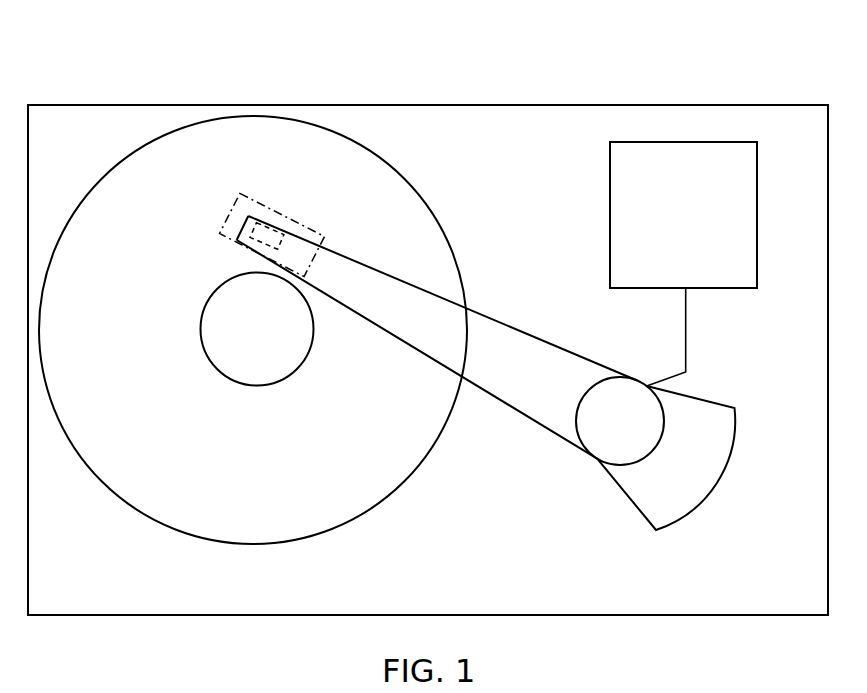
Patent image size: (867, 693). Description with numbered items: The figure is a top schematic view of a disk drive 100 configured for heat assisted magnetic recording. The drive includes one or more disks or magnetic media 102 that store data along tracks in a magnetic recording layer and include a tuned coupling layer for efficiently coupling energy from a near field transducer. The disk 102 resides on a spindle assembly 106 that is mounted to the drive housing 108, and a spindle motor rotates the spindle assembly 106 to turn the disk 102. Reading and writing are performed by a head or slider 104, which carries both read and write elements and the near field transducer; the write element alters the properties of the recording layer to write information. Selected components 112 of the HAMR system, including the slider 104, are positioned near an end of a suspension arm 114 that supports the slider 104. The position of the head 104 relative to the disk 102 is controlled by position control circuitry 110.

The disk drive 100 is at (163, 72).
The magnetic medium 102 is at (385, 160).
The head/slider 104 is at (275, 233).
The spindle assembly 106 is at (257, 329).
The drive housing 108 is at (542, 104).
The position control circuitry 110 is at (683, 215).
The selected components of the HAMR system 112 is at (265, 207).
The suspension arm 114 is at (502, 403).